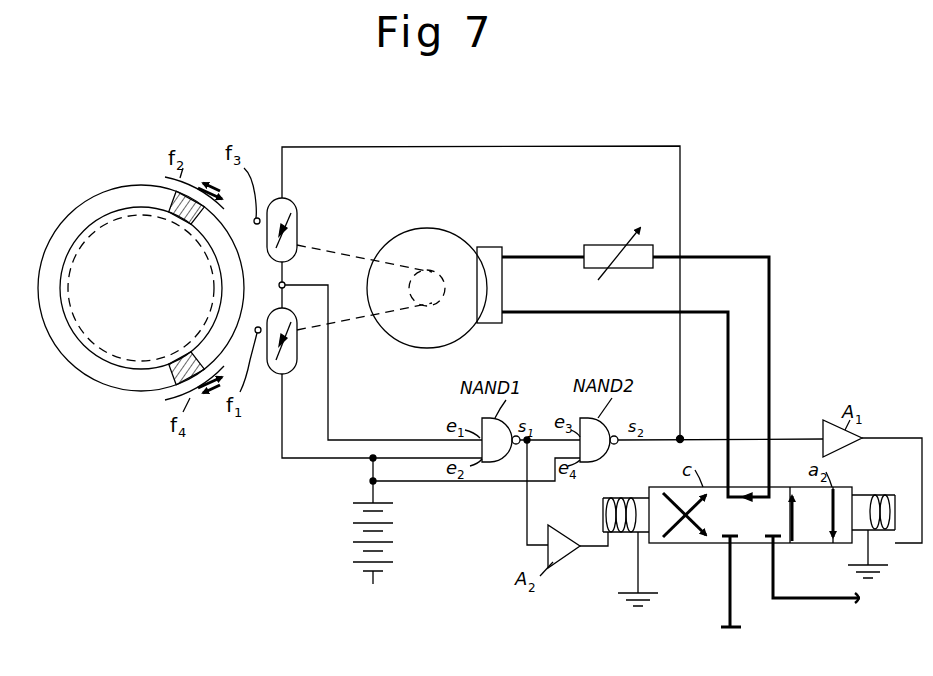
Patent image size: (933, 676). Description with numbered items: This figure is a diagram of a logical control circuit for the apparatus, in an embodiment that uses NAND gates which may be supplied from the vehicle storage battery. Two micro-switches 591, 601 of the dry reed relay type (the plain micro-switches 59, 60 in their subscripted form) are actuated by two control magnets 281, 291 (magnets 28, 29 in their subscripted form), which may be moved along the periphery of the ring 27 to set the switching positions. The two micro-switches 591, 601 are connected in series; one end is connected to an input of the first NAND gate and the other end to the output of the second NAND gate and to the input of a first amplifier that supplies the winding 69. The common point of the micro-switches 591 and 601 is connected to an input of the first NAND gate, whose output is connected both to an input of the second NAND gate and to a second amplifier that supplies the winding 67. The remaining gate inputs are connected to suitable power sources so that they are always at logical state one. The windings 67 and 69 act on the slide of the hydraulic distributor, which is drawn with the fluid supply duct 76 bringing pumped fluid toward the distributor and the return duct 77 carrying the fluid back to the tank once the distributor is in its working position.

The ring 27 is at (69, 333).
The control magnet 281 is at (148, 193).
The control magnet 28 is at (172, 196).
The control magnet 291 is at (148, 387).
The control magnet 29 is at (172, 382).
The micro-switch 591 is at (349, 233).
The micro-switch 59 is at (291, 214).
The micro-switch 601 is at (349, 366).
The micro-switch 60 is at (283, 366).
The winding 67 is at (618, 496).
The winding 69 is at (872, 495).
The duct 76 is at (727, 570).
The duct 77 is at (822, 580).